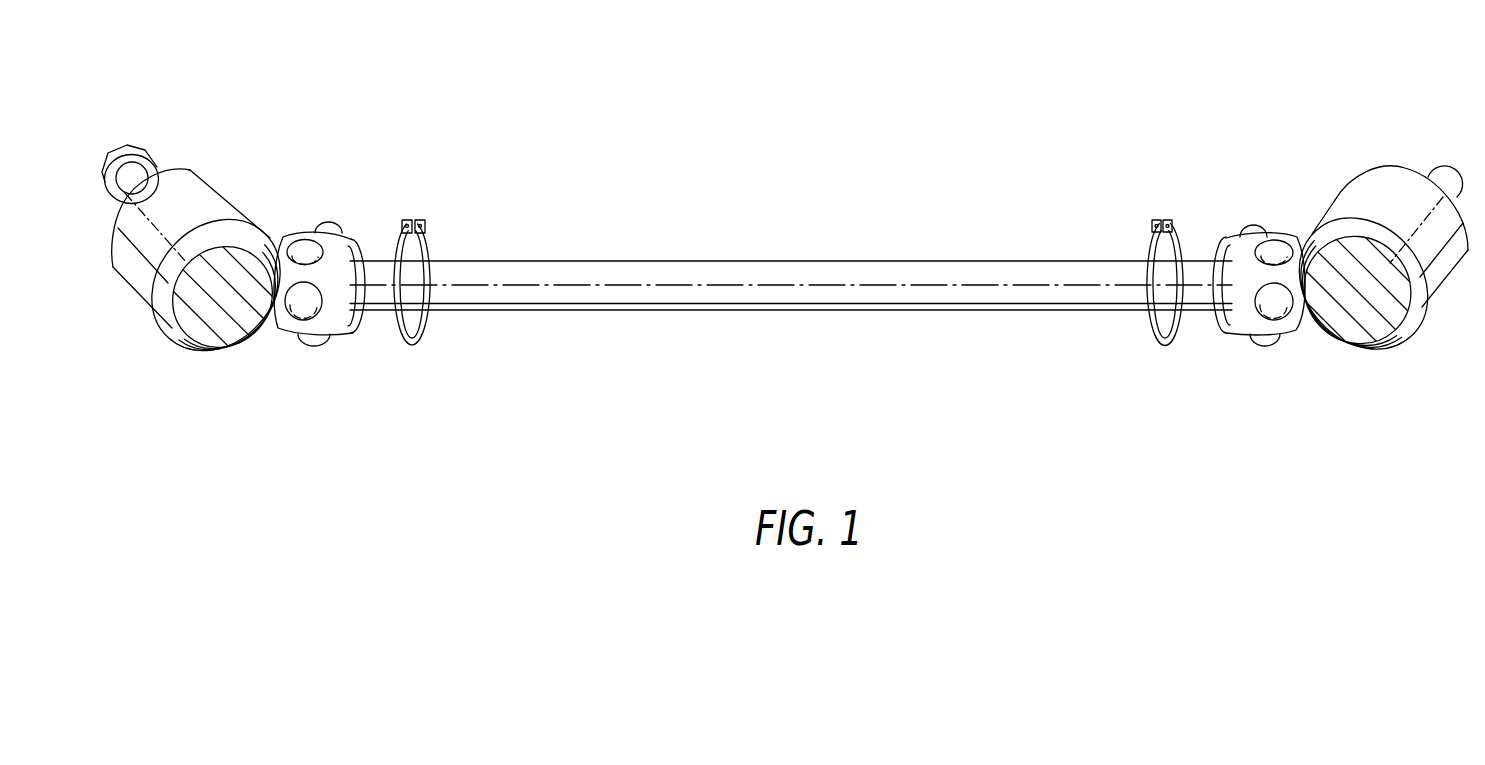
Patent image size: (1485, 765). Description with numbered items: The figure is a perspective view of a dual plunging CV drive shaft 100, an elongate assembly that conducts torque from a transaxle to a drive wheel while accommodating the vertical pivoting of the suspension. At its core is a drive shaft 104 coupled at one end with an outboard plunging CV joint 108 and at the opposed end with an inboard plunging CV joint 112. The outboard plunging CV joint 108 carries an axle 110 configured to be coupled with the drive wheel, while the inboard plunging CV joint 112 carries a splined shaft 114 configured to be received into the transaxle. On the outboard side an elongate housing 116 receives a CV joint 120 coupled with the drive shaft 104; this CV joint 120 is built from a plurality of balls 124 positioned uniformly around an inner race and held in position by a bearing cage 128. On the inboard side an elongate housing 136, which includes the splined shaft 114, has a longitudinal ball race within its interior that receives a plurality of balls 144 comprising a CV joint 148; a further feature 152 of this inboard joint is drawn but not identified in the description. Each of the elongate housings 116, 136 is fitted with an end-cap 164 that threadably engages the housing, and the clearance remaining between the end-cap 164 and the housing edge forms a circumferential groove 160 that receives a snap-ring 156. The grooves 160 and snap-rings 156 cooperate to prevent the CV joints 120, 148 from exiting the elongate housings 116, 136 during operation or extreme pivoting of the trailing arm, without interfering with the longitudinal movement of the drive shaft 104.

The dual plunging CV drive shaft 100 is at (828, 133).
The drive shaft 104 is at (792, 310).
The outboard plunging CV joint 108 is at (221, 131).
The axle 110 is at (124, 150).
The inboard plunging CV joint 112 is at (1357, 137).
The splined shaft 114 is at (1442, 172).
The elongate housing 116 is at (141, 274).
The CV joint 120 is at (350, 350).
The balls 124 is at (300, 255).
The bearing cage 128 is at (285, 318).
The elongate housing 136 is at (1345, 310).
The balls 144 is at (1253, 232).
The CV joint 148 is at (1256, 362).
The neck 152 is at (1235, 242).
The snap ring 156 is at (427, 225).
The groove 160 is at (224, 336).
The end-cap 164 is at (158, 296).